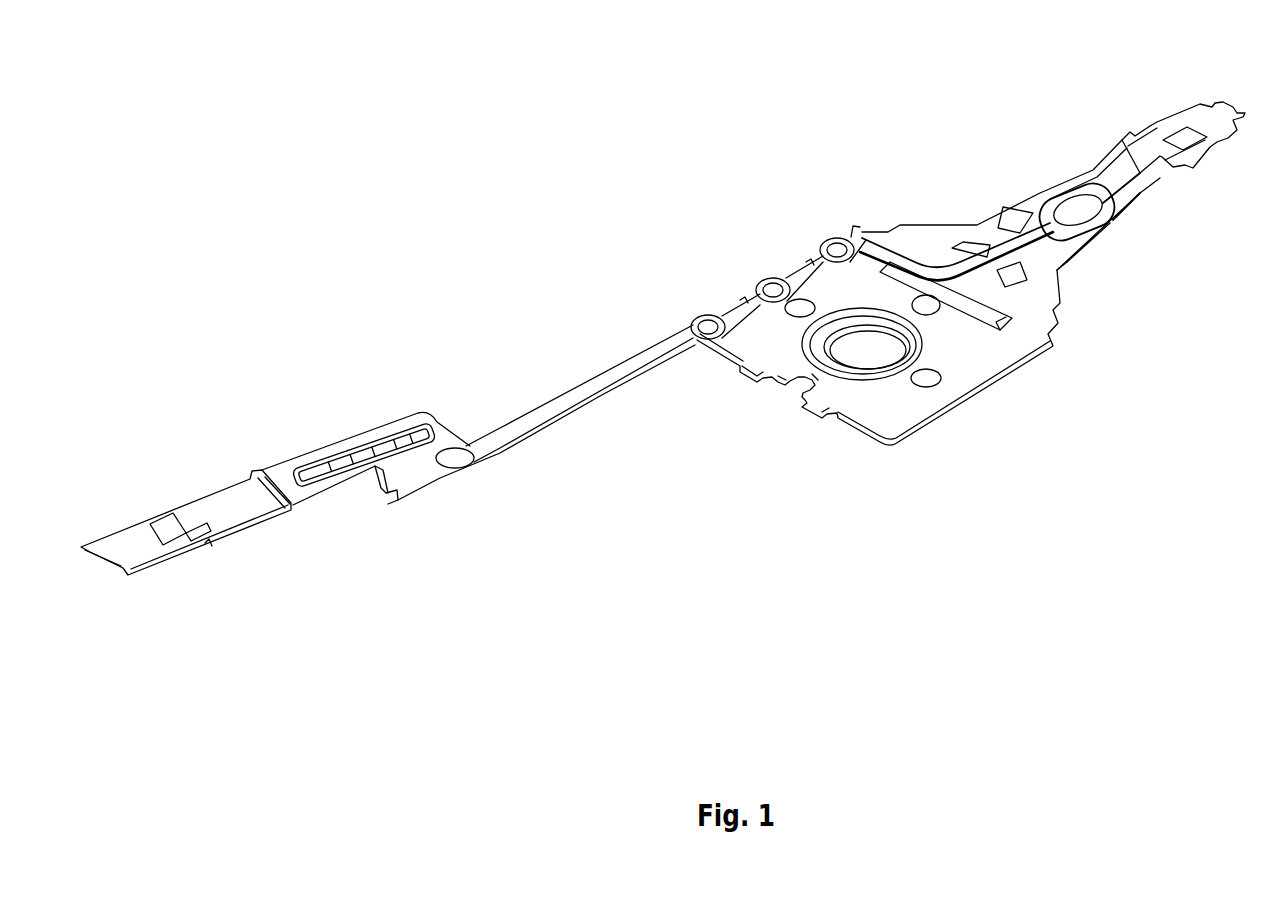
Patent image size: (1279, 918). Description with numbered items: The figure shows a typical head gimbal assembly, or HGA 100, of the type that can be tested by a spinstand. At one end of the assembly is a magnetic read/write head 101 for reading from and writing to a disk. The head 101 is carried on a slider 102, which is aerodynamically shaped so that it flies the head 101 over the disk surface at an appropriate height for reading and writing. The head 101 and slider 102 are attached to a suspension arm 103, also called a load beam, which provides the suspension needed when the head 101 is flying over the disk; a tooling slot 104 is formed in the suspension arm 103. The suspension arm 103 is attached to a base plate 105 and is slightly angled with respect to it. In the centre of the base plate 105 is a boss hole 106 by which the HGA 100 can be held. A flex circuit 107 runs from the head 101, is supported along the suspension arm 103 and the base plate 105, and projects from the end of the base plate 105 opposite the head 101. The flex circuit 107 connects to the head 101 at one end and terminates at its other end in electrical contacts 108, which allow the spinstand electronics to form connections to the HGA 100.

The head gimbal assembly 100 is at (670, 302).
The magnetic read/write head 101 is at (1185, 138).
The slider 102 is at (1186, 147).
The suspension arm 103 is at (1033, 211).
The tooling slot 104 is at (1076, 212).
The base plate 105 is at (895, 404).
The boss hole 106 is at (858, 353).
The flex circuit 107 is at (534, 418).
The electrical contacts 108 is at (345, 459).